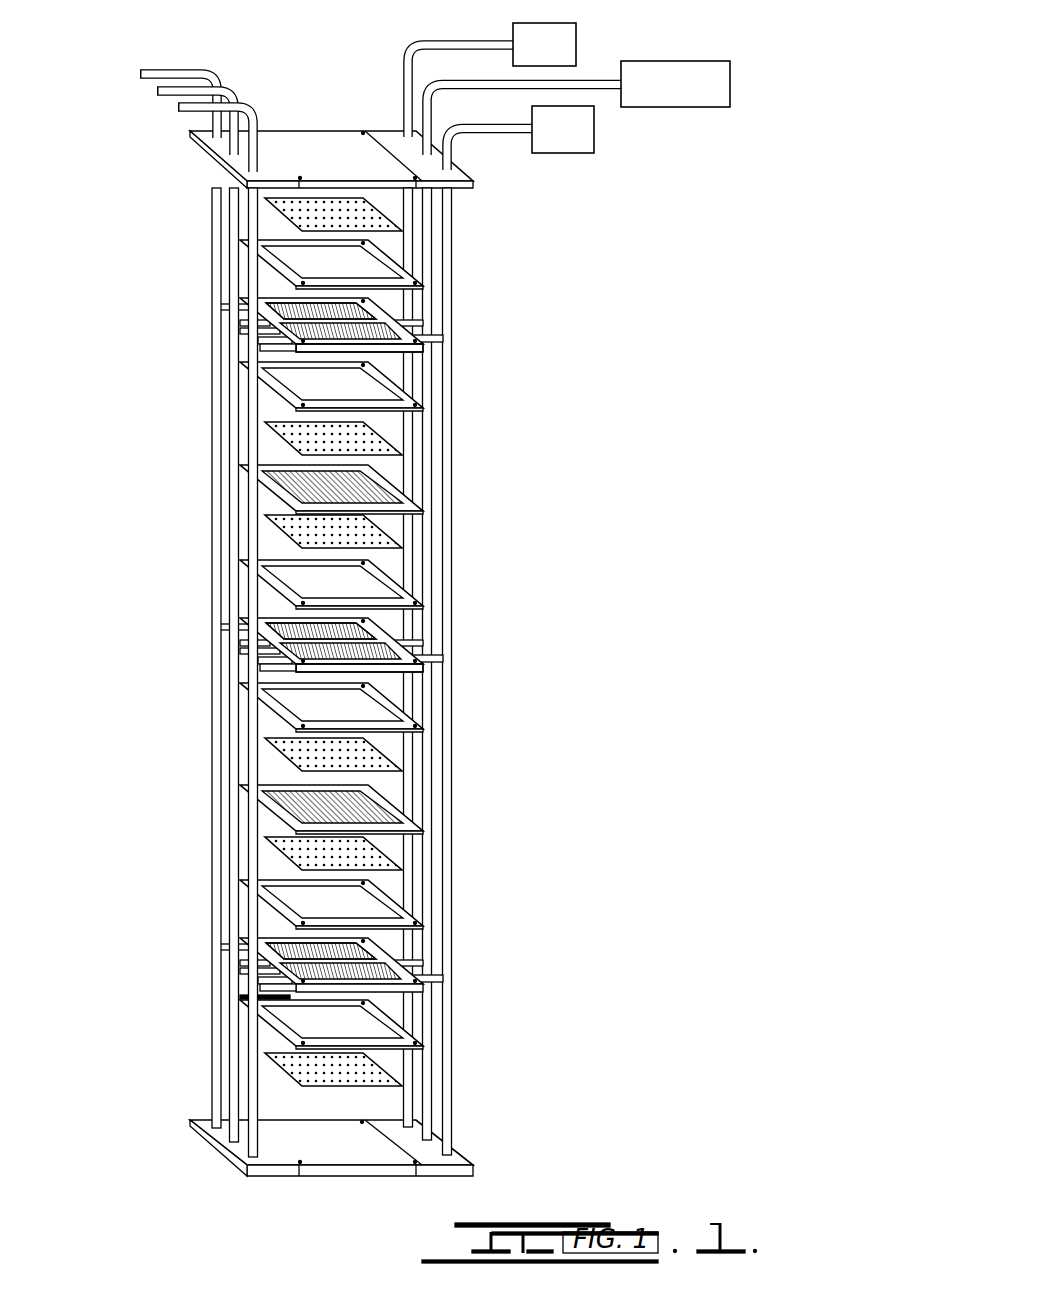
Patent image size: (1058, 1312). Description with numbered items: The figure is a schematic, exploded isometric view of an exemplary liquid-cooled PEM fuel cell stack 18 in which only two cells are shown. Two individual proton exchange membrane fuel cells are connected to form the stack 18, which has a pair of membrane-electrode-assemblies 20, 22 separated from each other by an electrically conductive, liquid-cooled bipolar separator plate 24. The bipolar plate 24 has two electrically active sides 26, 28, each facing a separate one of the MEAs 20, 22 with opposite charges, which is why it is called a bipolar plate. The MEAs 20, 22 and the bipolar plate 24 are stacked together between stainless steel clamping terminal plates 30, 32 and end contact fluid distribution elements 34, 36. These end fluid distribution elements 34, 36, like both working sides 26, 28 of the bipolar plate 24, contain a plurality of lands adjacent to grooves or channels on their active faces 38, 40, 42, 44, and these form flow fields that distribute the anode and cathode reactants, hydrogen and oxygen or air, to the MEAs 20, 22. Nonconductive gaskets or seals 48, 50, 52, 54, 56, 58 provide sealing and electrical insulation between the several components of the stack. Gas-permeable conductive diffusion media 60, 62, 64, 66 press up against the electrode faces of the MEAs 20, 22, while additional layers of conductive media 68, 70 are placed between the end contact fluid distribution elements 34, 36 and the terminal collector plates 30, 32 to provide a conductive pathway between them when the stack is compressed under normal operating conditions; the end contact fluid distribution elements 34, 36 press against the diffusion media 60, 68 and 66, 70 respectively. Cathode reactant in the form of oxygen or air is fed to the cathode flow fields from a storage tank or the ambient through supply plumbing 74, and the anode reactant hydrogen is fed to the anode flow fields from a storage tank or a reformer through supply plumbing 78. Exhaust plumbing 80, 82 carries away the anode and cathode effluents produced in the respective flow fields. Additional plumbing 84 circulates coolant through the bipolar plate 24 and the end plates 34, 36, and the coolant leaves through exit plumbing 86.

The fuel cell stack 18 is at (660, 237).
The membrane-electrode-assembly 20 is at (270, 493).
The membrane-electrode-assembly 22 is at (408, 800).
The bipolar separator plate 24 is at (270, 647).
The electrically active side 26 is at (386, 629).
The electrically active side 28 is at (385, 677).
The clamping terminal plate 30 is at (362, 166).
The clamping terminal plate 32 is at (362, 1154).
The end contact fluid distribution element 34 is at (265, 335).
The end contact fluid distribution element 36 is at (267, 970).
The active face 38 is at (370, 312).
The active face 40 is at (393, 360).
The active face 42 is at (390, 956).
The active face 44 is at (425, 998).
The nonconductive gasket 48 is at (270, 393).
The nonconductive gasket 50 is at (270, 590).
The nonconductive gasket 52 is at (270, 710).
The nonconductive gasket 54 is at (272, 910).
The nonconductive gasket 56 is at (272, 1023).
The nonconductive gasket 58 is at (272, 268).
The gas-permeable conductive diffusion medium 60 is at (277, 438).
The gas-permeable conductive diffusion medium 62 is at (277, 538).
The gas-permeable conductive diffusion medium 64 is at (280, 760).
The gas-permeable conductive diffusion medium 66 is at (280, 852).
The conductive media layer 68 is at (282, 213).
The conductive media layer 70 is at (290, 1073).
The supply plumbing 74 is at (407, 92).
The supply plumbing 78 is at (485, 128).
The exhaust plumbing 80 is at (252, 110).
The exhaust plumbing 82 is at (164, 70).
The coolant plumbing 84 is at (580, 83).
The coolant exit plumbing 86 is at (222, 92).